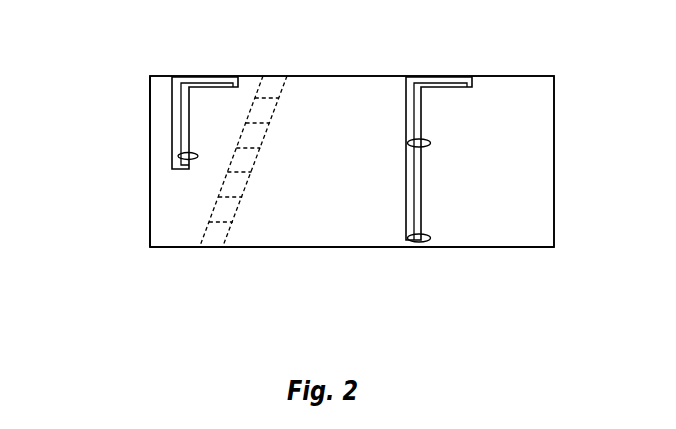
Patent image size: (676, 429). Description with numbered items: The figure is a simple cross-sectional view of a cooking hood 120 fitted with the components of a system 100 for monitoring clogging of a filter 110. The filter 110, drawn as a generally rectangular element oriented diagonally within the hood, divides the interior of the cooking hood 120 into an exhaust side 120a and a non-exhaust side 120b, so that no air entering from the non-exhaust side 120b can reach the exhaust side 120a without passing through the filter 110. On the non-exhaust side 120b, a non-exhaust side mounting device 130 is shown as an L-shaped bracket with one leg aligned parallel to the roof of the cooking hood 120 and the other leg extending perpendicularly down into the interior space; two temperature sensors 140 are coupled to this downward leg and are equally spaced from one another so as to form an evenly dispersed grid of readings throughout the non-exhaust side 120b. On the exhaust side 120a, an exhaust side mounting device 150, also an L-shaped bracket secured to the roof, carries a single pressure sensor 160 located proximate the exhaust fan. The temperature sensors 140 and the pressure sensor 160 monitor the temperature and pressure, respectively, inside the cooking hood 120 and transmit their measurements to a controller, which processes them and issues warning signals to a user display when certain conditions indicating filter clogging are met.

The system for monitoring clogging of a filter 100 is at (58, 53).
The filter 110 is at (263, 110).
The cooking hood 120 is at (554, 148).
The exhaust side 120a is at (175, 213).
The non-exhaust side 120b is at (325, 228).
The non-exhaust side mounting device 130 is at (462, 86).
The temperature sensors 140 is at (429, 144).
The exhaust side mounting device 150 is at (203, 88).
The pressure sensor 160 is at (178, 156).